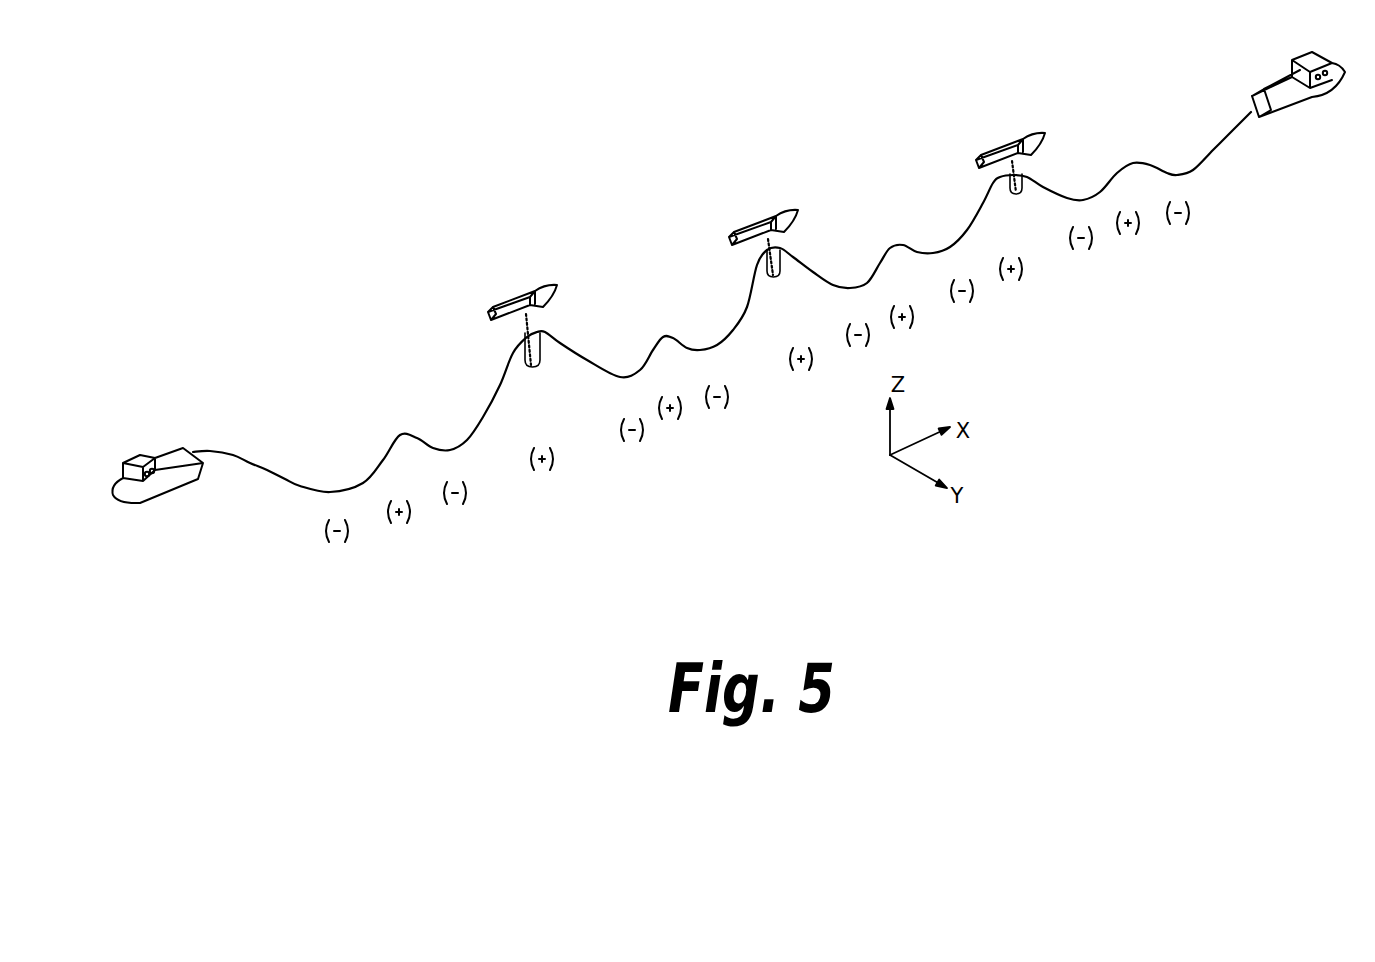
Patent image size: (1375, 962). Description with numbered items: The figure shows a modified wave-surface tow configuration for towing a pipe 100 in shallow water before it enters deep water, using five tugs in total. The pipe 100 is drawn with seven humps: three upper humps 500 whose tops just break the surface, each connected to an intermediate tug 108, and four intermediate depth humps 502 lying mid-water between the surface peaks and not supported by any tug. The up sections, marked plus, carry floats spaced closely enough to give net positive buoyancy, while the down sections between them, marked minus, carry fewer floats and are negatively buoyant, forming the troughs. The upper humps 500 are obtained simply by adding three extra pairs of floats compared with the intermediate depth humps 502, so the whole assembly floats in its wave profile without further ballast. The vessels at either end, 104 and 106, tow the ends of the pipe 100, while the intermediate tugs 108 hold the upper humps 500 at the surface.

The pipe 100 is at (275, 473).
The towing vessel 104 is at (1305, 108).
The tail vessel 106 is at (162, 452).
The intermediate tug 108 is at (513, 298).
The upper hump 500 is at (543, 332).
The intermediate depth hump 502 is at (391, 412).